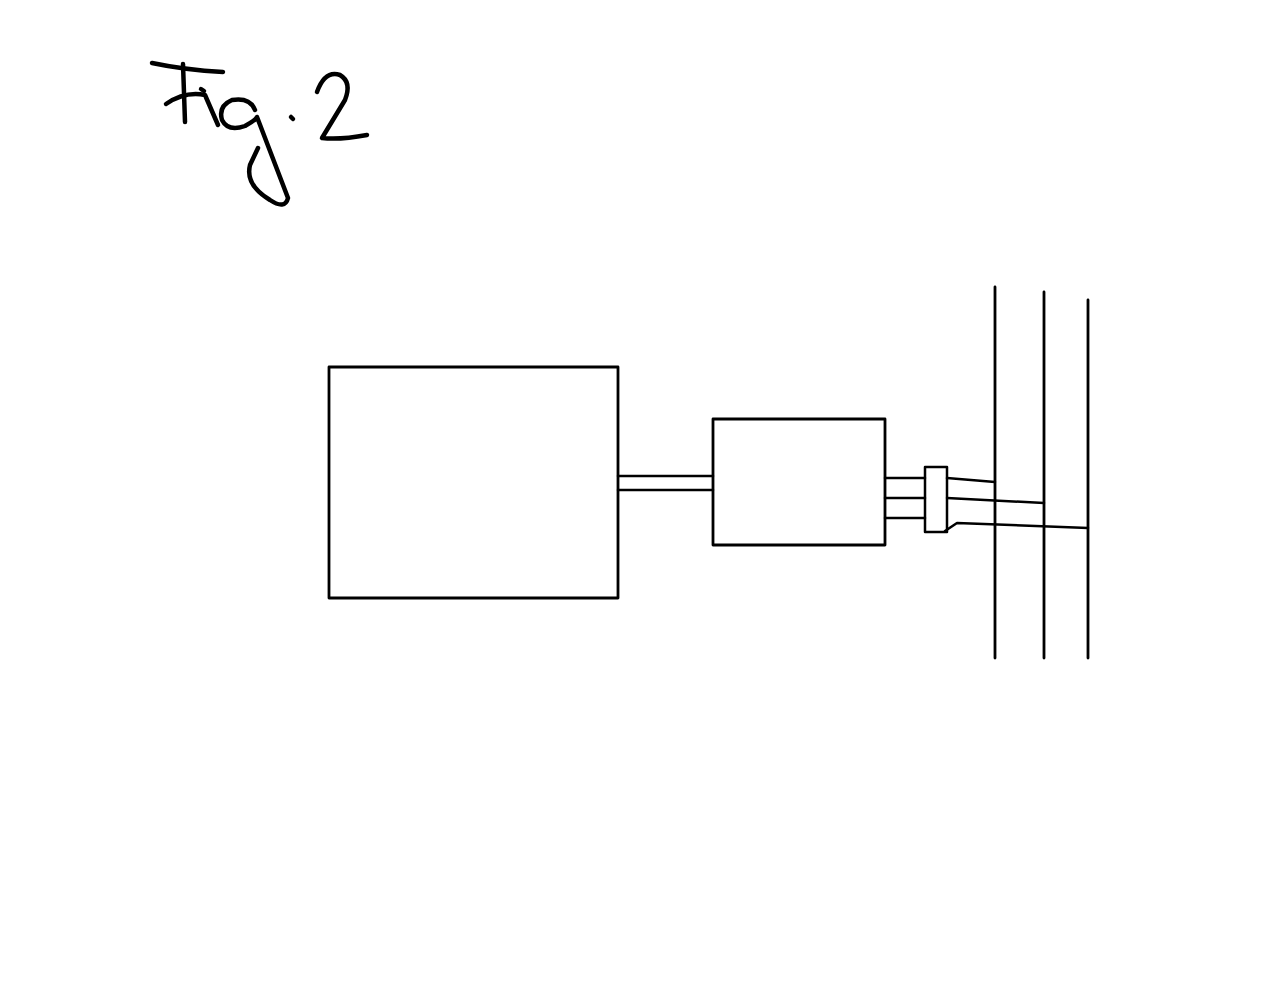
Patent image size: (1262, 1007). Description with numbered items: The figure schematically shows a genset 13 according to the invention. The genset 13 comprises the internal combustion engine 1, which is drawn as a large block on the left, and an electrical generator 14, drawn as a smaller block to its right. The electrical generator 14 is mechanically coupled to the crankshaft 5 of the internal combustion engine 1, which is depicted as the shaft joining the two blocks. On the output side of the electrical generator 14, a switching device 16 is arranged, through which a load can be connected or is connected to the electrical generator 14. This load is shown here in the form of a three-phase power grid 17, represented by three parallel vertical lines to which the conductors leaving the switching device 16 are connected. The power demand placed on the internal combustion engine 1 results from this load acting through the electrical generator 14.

The internal combustion engine 1 is at (503, 496).
The crankshaft 5 is at (655, 475).
The genset 13 is at (613, 662).
The electrical generator 14 is at (828, 510).
The switching device 16 is at (947, 517).
The three-phase power grid 17 is at (1110, 347).